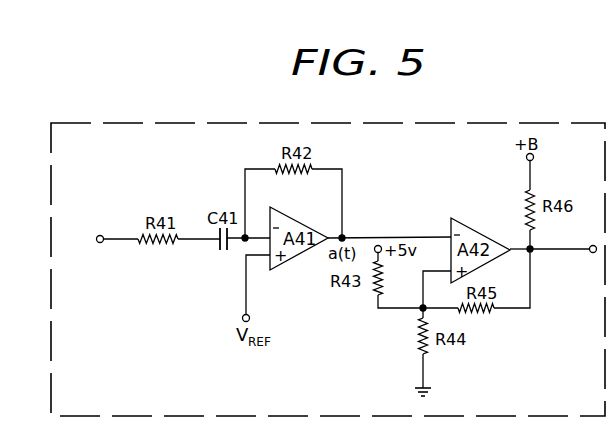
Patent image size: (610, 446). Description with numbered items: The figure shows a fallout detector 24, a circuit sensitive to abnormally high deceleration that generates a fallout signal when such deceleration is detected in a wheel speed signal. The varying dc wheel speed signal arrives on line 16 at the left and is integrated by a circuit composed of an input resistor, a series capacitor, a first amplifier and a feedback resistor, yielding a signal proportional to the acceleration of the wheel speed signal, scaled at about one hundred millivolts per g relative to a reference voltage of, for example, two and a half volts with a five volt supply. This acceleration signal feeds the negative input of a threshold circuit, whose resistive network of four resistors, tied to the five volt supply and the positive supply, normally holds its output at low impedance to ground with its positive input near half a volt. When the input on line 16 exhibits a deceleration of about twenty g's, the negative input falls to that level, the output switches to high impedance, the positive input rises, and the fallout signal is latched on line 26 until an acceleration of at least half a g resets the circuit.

The fallout detector 24 is at (127, 165).
The line 16 is at (119, 237).
The line 26 is at (554, 253).